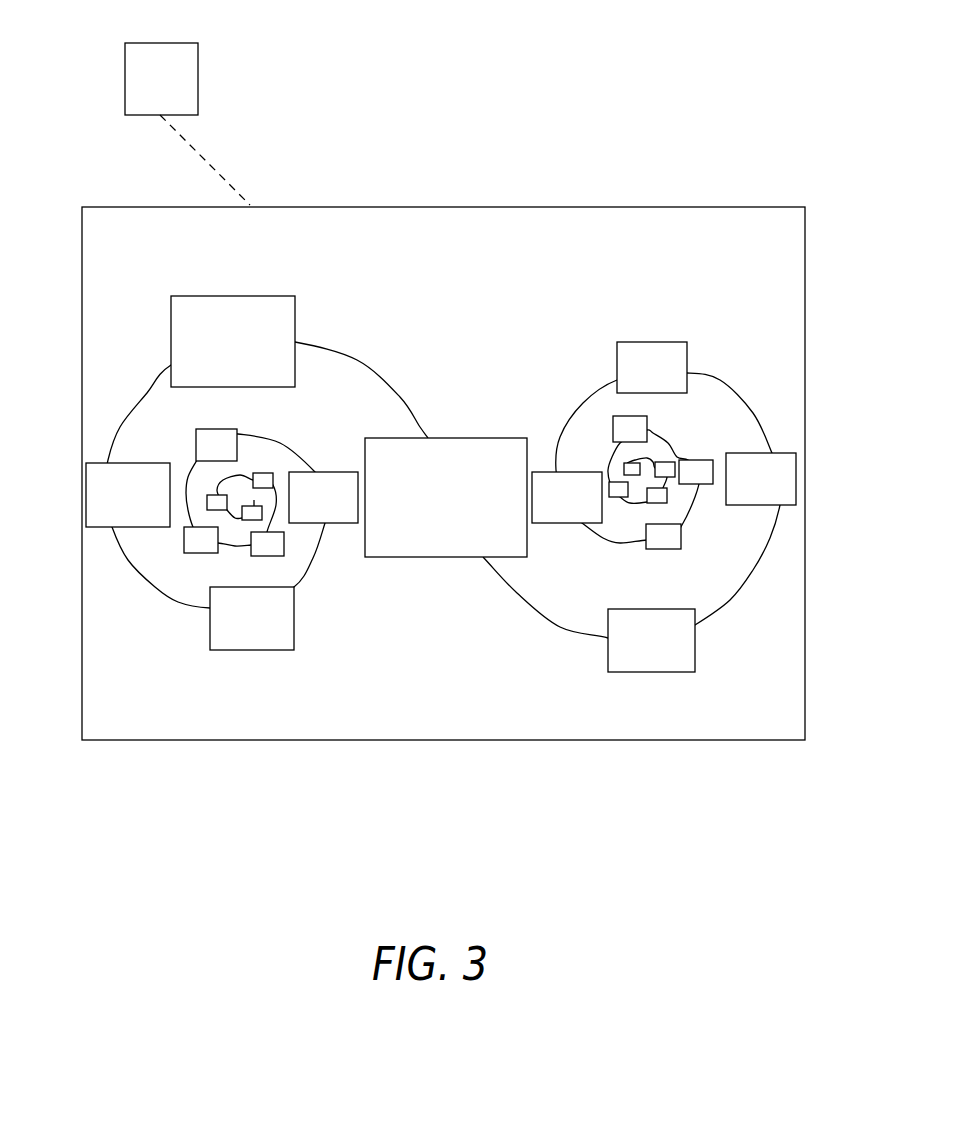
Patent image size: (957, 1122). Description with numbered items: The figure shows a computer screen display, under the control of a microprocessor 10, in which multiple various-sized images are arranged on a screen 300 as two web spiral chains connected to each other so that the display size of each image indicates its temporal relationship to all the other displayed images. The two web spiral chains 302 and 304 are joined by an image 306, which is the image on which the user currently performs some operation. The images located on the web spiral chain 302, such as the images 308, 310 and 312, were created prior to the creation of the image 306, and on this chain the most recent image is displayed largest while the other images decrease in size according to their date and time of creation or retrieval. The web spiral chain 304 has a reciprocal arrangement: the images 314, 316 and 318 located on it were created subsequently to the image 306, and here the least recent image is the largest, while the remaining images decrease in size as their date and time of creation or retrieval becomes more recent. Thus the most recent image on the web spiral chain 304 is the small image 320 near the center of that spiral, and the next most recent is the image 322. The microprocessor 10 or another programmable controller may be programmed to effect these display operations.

The microprocessor 10 is at (198, 43).
The screen 300 is at (618, 207).
The web spiral chain 302 is at (167, 593).
The web spiral chain 304 is at (520, 595).
The image 306 is at (430, 558).
The image 308 is at (265, 296).
The image 310 is at (86, 470).
The image 312 is at (238, 637).
The image 314 is at (610, 655).
The image 316 is at (797, 473).
The image 318 is at (657, 348).
The image 320 is at (628, 462).
The image 322 is at (667, 463).